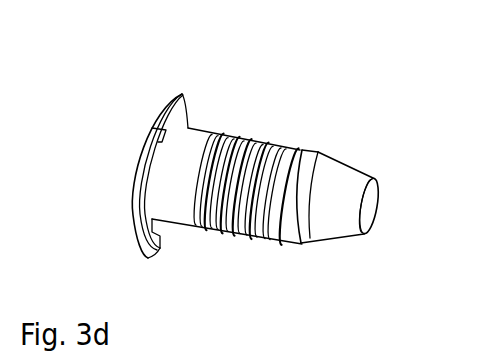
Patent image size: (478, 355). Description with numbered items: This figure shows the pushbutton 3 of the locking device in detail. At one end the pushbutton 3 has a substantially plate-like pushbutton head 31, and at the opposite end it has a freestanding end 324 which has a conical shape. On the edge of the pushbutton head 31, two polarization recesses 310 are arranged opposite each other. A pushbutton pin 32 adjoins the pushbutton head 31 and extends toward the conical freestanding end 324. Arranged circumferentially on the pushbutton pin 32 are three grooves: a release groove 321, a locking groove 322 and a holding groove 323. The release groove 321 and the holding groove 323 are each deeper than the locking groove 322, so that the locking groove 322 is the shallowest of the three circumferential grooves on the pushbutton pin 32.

The pushbutton 3 is at (116, 181).
The pushbutton head 31 is at (151, 262).
The polarization recess 310 is at (152, 128).
The pushbutton pin 32 is at (365, 247).
The release groove 321 is at (225, 142).
The locking groove 322 is at (250, 140).
The holding groove 323 is at (290, 148).
The freestanding end 324 is at (318, 242).